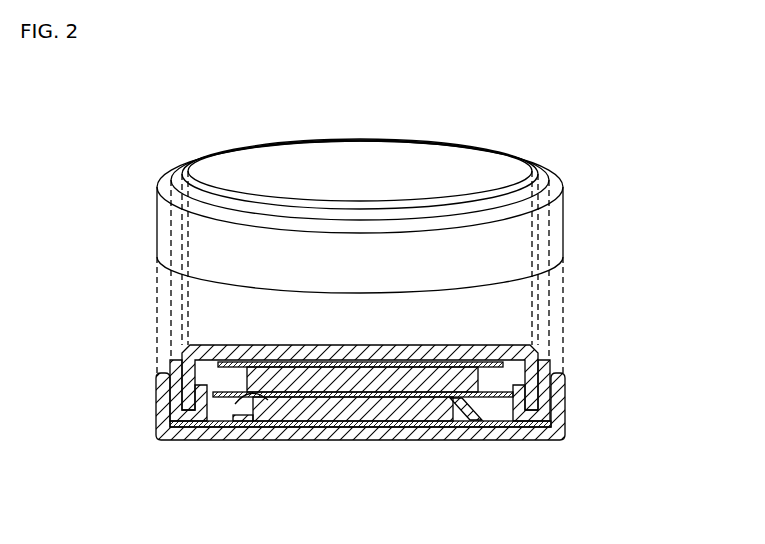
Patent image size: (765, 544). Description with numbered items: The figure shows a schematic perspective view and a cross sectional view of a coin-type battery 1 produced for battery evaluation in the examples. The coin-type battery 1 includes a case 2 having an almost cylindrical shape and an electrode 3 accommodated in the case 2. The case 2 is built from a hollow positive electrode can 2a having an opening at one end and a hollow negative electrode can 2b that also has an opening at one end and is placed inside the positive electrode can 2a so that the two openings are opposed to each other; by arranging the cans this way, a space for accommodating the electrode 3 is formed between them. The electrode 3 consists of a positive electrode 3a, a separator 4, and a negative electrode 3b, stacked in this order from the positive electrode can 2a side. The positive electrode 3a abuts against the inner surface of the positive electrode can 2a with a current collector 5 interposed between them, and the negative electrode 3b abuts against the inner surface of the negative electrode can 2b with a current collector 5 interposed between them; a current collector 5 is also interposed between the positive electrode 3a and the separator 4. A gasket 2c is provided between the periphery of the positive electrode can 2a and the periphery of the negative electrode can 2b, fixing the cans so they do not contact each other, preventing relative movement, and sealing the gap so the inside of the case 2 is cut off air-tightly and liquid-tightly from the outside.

The coin-type battery 1 is at (565, 146).
The case 2 is at (410, 391).
The positive electrode can 2a is at (567, 402).
The negative electrode can 2b is at (540, 352).
The gasket 2c is at (550, 362).
The electrode 3 is at (360, 444).
The positive electrode 3a is at (421, 413).
The negative electrode 3b is at (396, 413).
The separator 4 is at (484, 421).
The current collector 5 is at (250, 400).